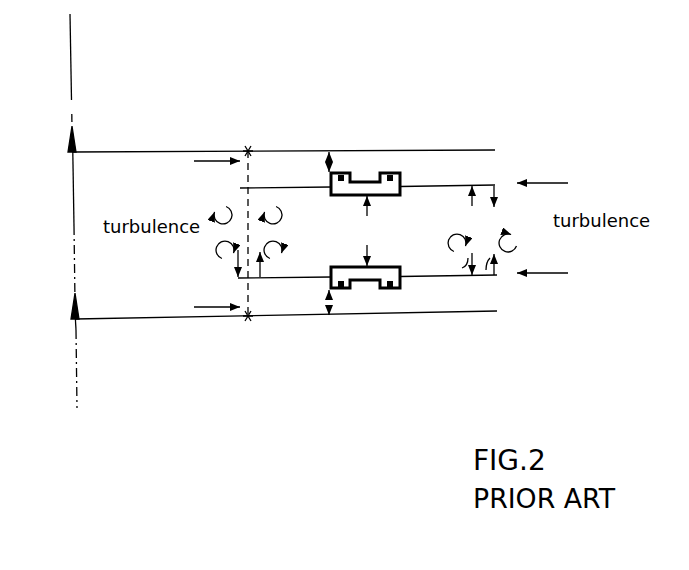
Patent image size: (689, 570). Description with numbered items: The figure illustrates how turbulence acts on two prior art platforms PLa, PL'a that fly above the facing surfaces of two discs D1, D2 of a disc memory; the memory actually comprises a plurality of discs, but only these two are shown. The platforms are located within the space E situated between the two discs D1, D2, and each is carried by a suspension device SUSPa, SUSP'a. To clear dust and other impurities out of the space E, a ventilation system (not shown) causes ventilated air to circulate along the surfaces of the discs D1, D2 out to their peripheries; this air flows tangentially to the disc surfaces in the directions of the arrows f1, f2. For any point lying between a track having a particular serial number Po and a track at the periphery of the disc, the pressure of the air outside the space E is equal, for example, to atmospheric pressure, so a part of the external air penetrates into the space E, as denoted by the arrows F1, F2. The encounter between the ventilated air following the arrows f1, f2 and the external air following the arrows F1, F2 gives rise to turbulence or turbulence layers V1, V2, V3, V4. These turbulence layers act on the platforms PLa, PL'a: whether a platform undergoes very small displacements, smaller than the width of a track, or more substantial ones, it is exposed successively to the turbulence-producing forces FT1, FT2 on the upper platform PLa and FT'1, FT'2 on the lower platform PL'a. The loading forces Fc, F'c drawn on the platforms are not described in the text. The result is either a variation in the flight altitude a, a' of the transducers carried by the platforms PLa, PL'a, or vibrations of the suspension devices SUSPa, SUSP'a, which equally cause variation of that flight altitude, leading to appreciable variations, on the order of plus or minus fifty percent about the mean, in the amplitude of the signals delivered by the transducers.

The space E is at (74, 228).
The disc D2 is at (99, 152).
The disc D1 is at (142, 318).
The track having a particular serial number Po is at (250, 218).
The ventilated air direction arrow f2 is at (217, 174).
The ventilated air direction arrow f1 is at (217, 295).
The suspension device SUSPa is at (443, 186).
The suspension device SUSP'a is at (387, 316).
The platform PLa is at (366, 181).
The platform PL'a is at (365, 312).
The flight altitude a is at (320, 163).
The flight altitude a' is at (320, 301).
The force on upper plate Fc is at (379, 208).
The force on lower plate F'c is at (381, 255).
The turbulence force FT2 is at (455, 201).
The turbulence force FT1 is at (512, 200).
The turbulence force FT'2 is at (464, 277).
The turbulence force FT'1 is at (509, 278).
The external air arrow F1 is at (554, 182).
The external air arrow F2 is at (554, 272).
The turbulence layer V1 is at (216, 242).
The turbulence layer V2 is at (281, 242).
The turbulence layer V3 is at (447, 239).
The turbulence layer V4 is at (519, 239).